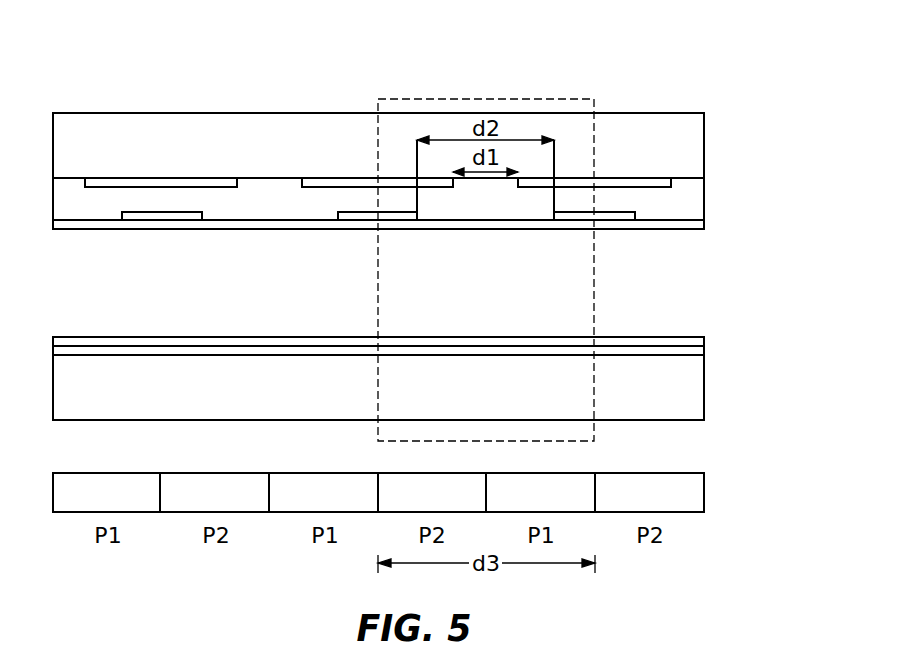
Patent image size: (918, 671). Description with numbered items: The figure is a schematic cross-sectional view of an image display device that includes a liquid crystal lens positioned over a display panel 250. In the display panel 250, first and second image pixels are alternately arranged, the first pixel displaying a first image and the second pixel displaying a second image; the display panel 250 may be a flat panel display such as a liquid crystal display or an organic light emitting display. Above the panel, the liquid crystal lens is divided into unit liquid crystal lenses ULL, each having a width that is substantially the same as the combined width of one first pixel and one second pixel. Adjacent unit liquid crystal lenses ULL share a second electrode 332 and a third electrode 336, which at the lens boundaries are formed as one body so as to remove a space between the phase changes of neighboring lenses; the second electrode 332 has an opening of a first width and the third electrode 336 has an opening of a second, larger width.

The second electrode 332 is at (155, 182).
The third electrode 336 is at (155, 222).
The display panel 250 is at (698, 493).
The unit liquid crystal lens ULL is at (470, 99).